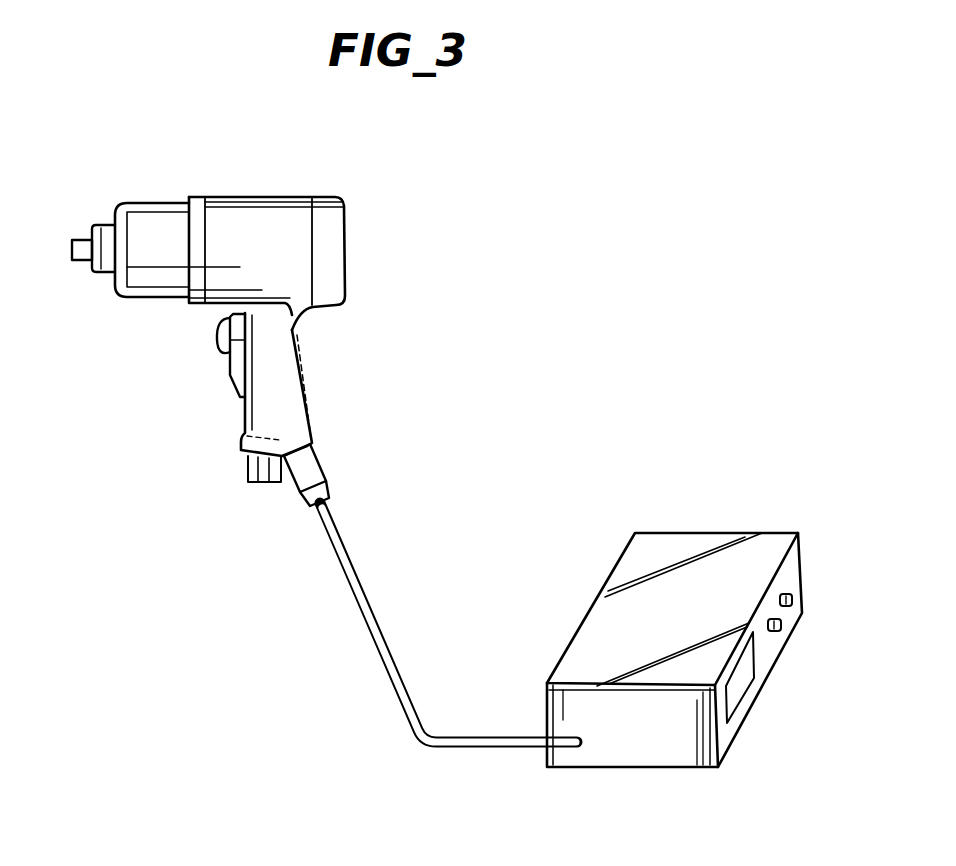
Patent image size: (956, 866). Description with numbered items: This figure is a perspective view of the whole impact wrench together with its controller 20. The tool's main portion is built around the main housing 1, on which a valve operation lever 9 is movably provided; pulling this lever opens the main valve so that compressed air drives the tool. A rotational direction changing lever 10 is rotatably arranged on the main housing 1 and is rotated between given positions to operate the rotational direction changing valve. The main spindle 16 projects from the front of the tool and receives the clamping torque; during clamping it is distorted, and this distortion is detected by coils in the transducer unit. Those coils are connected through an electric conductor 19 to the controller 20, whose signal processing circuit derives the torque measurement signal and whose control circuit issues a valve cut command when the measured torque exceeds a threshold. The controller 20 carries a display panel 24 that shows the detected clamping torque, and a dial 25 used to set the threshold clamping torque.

The main housing 1 is at (259, 213).
The valve operation lever 9 is at (230, 378).
The rotational direction changing lever 10 is at (217, 345).
The main spindle 16 is at (80, 246).
The electric conductor 19 is at (350, 592).
The controller 20 is at (632, 768).
The display panel 24 is at (737, 690).
The dial 25 is at (787, 630).